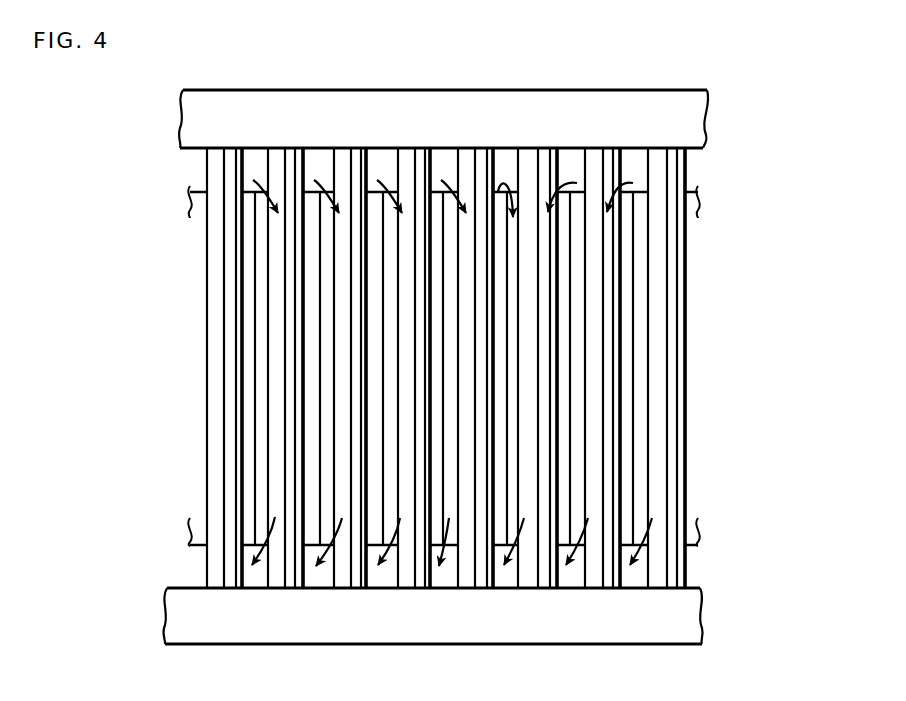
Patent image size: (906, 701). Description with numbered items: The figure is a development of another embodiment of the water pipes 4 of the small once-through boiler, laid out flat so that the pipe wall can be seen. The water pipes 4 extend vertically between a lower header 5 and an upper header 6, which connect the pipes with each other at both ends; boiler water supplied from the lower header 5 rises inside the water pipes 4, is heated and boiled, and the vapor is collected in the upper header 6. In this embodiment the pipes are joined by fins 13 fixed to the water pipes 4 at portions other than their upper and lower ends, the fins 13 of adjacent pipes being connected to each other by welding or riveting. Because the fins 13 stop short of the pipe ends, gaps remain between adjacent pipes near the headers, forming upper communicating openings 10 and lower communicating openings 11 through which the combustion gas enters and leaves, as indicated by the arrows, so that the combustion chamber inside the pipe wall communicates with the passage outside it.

The water pipes 4 is at (680, 280).
The lower header 5 is at (680, 620).
The upper header 6 is at (672, 121).
The upper communicating openings 10 is at (255, 165).
The lower communicating openings 11 is at (253, 577).
The fins 13 is at (580, 352).